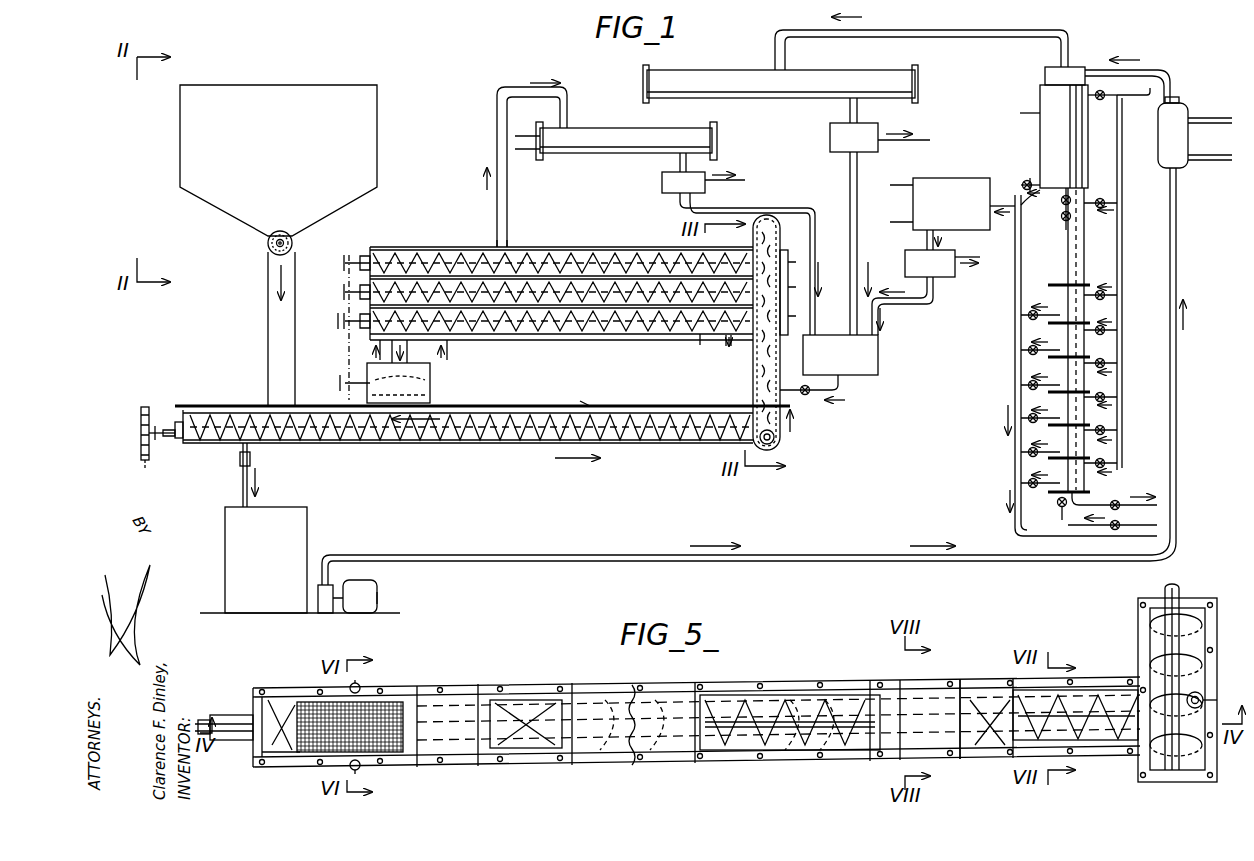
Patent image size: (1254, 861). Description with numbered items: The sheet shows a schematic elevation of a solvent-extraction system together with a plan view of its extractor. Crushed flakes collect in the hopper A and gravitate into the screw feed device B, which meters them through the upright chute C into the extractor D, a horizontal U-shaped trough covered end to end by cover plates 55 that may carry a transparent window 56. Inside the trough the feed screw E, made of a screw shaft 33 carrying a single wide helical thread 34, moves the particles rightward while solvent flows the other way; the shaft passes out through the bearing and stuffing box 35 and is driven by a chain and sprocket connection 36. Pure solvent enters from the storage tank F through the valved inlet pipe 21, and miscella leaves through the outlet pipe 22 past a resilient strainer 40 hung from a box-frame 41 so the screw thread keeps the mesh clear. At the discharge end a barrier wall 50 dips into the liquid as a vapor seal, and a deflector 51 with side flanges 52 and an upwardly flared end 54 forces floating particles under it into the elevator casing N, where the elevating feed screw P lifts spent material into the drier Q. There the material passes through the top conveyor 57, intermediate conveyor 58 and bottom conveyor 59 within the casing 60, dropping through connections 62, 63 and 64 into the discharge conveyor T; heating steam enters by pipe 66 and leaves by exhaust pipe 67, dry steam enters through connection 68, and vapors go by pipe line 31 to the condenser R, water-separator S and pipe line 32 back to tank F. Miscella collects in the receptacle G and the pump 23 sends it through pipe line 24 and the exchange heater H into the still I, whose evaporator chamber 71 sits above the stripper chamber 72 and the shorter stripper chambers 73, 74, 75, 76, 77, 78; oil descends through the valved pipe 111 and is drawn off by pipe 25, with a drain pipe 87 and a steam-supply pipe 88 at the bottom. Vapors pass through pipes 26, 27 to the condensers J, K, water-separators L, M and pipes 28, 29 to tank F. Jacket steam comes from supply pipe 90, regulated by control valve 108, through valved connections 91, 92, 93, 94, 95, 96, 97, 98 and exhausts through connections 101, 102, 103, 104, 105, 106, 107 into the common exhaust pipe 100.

In FIG. 1, the hopper A is at (180, 145).
In FIG. 1, the feed device B is at (268, 246).
In FIG. 1, the chute C is at (268, 330).
In FIG. 5, the chute C is at (515, 700).
In FIG. 1, the extractor D is at (257, 403).
In FIG. 5, the extractor D is at (462, 683).
In FIG. 1, the feed screw E is at (283, 445).
In FIG. 5, the feed screw E is at (418, 688).
In FIG. 1, the solvent storage tank F is at (878, 355).
In FIG. 1, the receptacle G is at (225, 527).
In FIG. 1, the exchange heater H is at (1188, 136).
In FIG. 1, the still I is at (1178, 283).
In FIG. 1, the condenser J is at (735, 70).
In FIG. 1, the condenser K is at (957, 178).
In FIG. 1, the water-separator L is at (878, 134).
In FIG. 1, the water-separator M is at (905, 265).
In FIG. 1, the elevator casing N is at (753, 363).
In FIG. 5, the elevator casing N is at (1138, 613).
In FIG. 1, the elevating feed screw P is at (778, 430).
In FIG. 5, the elevating feed screw P is at (1165, 590).
In FIG. 1, the drier Q is at (407, 247).
In FIG. 1, the condenser R is at (604, 128).
In FIG. 1, the water-separator S is at (662, 190).
In FIG. 1, the screw conveyor T is at (430, 392).
In FIG. 1, the inlet pipe 21 is at (842, 392).
In FIG. 5, the inlet pipe 21 is at (1217, 700).
In FIG. 1, the outlet pipe 22 is at (243, 487).
In FIG. 5, the outlet pipe 22 is at (360, 683).
In FIG. 1, the pump 23 is at (320, 585).
In FIG. 1, the pipe line 24 is at (416, 556).
In FIG. 1, the oil draw-off pipe 25 is at (1120, 503).
In FIG. 1, the top outlet pipe 26 is at (970, 40).
In FIG. 1, the vapor pipe 27 is at (1018, 218).
In FIG. 1, the condensate pipe 28 is at (858, 210).
In FIG. 1, the condensate pipe 29 is at (918, 305).
In FIG. 1, the pipe line 31 is at (495, 150).
In FIG. 1, the pipe line 32 is at (818, 228).
In FIG. 1, the screw shaft 33 is at (165, 425).
In FIG. 5, the screw shaft 33 is at (224, 712).
In FIG. 5, the helical thread 34 is at (855, 695).
In FIG. 1, the bearing and stuffing box 35 is at (170, 438).
In FIG. 5, the bearing and stuffing box 35 is at (236, 742).
In FIG. 1, the chain and sprocket connection 36 is at (141, 452).
In FIG. 5, the strainer 40 is at (310, 688).
In FIG. 5, the box-frame 41 is at (307, 767).
In FIG. 5, the barrier wall 50 is at (1140, 760).
In FIG. 5, the deflector 51 is at (1090, 690).
In FIG. 5, the side flanges 52 is at (995, 690).
In FIG. 5, the flared front end 54 is at (1010, 700).
In FIG. 1, the cover plates 55 is at (670, 407).
In FIG. 5, the cover plates 55 is at (412, 757).
In FIG. 5, the transparent window 56 is at (782, 695).
In FIG. 1, the top conveyor 57 is at (470, 250).
In FIG. 1, the intermediate conveyor 58 is at (447, 250).
In FIG. 1, the bottom conveyor 59 is at (466, 338).
In FIG. 1, the casing 60 is at (518, 250).
In FIG. 1, the connection 62 is at (390, 252).
In FIG. 1, the connection 63 is at (702, 336).
In FIG. 1, the connection 64 is at (408, 348).
In FIG. 1, the steam supply pipe 66 is at (454, 349).
In FIG. 1, the exhaust pipe 67 is at (730, 346).
In FIG. 1, the pipe connection 68 is at (368, 354).
In FIG. 1, the evaporator chamber 71 is at (1075, 140).
In FIG. 1, the stripper chamber 72 is at (1078, 246).
In FIG. 1, the stripper chamber 73 is at (1058, 300).
In FIG. 1, the stripper chamber 74 is at (1058, 335).
In FIG. 1, the stripper chamber 75 is at (1058, 370).
In FIG. 1, the stripper chamber 76 is at (1058, 402).
In FIG. 1, the stripper chamber 77 is at (1058, 438).
In FIG. 1, the stripper chamber 78 is at (1058, 468).
In FIG. 1, the drain pipe 87 is at (1060, 508).
In FIG. 1, the steam-supply pipe 88 is at (1125, 525).
In FIG. 1, the steam supply pipe 90 is at (1110, 97).
In FIG. 1, the valved connection 91 is at (1118, 118).
In FIG. 1, the valved connection 92 is at (1121, 221).
In FIG. 1, the valved connection 93 is at (1108, 297).
In FIG. 1, the valved connection 94 is at (1108, 331).
In FIG. 1, the valved connection 95 is at (1108, 363).
In FIG. 1, the valved connection 96 is at (1108, 397).
In FIG. 1, the valved connection 97 is at (1108, 430).
In FIG. 1, the valved connection 98 is at (1108, 465).
In FIG. 1, the exhaust pipe 100 is at (1020, 538).
In FIG. 1, the valved connection 101 is at (1024, 180).
In FIG. 1, the valved connection 102 is at (1025, 315).
In FIG. 1, the valved connection 103 is at (1025, 348).
In FIG. 1, the valved connection 104 is at (1025, 383).
In FIG. 1, the valved connection 105 is at (1025, 418).
In FIG. 1, the valved connection 106 is at (1025, 453).
In FIG. 1, the valved connection 107 is at (1025, 486).
In FIG. 1, the control valve 108 is at (1117, 204).
In FIG. 1, the valved pipe 111 is at (1071, 216).